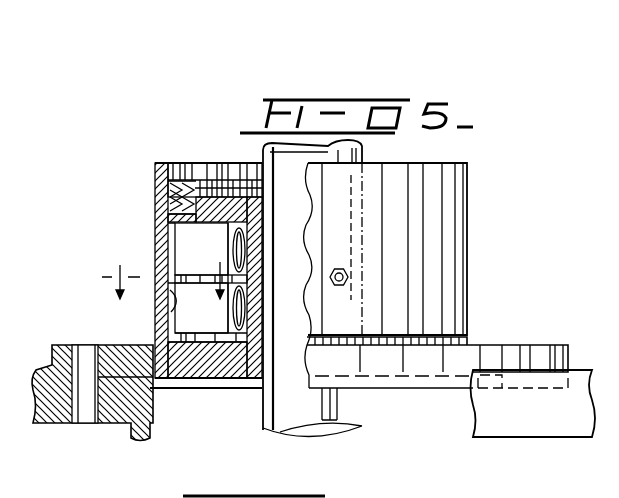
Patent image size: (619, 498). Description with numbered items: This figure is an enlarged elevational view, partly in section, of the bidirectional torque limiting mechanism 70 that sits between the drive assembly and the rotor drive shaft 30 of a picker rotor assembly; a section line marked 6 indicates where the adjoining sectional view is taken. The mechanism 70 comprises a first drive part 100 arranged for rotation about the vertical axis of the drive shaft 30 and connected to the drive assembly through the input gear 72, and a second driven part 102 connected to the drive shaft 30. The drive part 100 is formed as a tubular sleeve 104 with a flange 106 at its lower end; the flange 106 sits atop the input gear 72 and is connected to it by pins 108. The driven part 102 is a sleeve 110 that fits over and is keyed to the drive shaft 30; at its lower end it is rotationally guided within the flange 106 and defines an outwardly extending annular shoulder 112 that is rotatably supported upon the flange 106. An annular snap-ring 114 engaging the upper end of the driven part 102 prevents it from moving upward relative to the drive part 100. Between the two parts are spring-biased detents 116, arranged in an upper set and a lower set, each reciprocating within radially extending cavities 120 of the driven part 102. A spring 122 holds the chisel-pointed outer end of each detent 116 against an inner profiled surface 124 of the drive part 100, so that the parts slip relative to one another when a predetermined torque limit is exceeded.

The first drive part 100 is at (150, 200).
The second driven part 102 is at (203, 192).
The tubular sleeve 104 is at (177, 220).
The flange 106 is at (527, 352).
The pins 108 is at (82, 345).
The sleeve 110 is at (234, 205).
The annular shoulder 112 is at (222, 355).
The annular snap-ring 114 is at (157, 178).
The spring-biased detents 116 is at (213, 254).
The radially extending cavities 120 is at (177, 272).
The spring 122 is at (245, 305).
The inner profiled surface 124 is at (170, 302).
The drive shaft 30 is at (360, 411).
The bidirectional torque limiting mechanism 70 is at (476, 230).
The input gear 72 is at (52, 418).
The section line 6- 6 is at (163, 283).